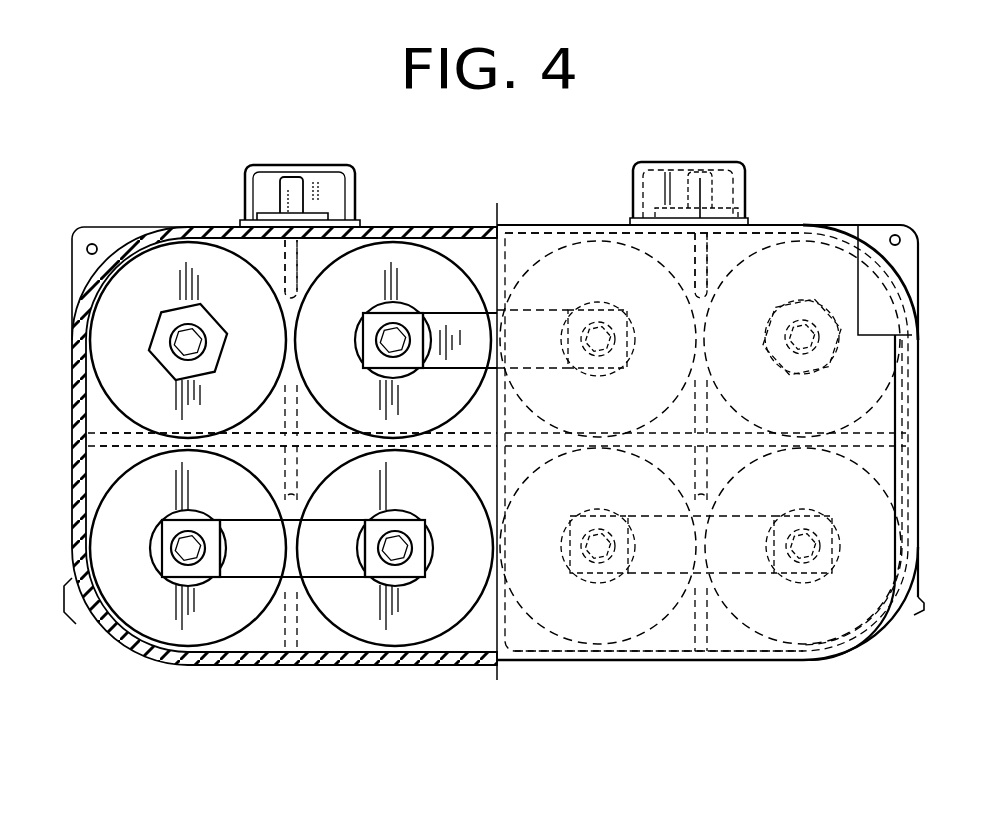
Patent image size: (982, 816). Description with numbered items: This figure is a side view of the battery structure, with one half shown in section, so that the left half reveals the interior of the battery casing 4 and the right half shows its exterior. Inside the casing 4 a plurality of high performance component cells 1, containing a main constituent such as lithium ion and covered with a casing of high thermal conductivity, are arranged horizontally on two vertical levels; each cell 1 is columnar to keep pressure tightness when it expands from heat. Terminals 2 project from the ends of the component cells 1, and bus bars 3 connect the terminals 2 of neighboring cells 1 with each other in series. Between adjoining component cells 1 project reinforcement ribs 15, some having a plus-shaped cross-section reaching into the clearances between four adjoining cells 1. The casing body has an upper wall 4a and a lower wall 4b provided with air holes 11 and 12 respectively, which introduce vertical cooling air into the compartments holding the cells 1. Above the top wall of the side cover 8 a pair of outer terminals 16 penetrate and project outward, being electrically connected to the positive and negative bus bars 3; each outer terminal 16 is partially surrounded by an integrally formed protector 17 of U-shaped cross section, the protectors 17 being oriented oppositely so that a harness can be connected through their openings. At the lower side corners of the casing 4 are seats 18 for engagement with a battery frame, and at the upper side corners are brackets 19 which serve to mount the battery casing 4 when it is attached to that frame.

The component cell 1 is at (150, 268).
The terminal 2 is at (197, 306).
The bus bar 3 is at (448, 362).
The battery casing 4 is at (506, 216).
The upper wall 4a is at (760, 223).
The lower wall 4b is at (725, 661).
The side cover 8 is at (886, 399).
The air hole 11 is at (613, 232).
The air hole 12 is at (640, 662).
The reinforcement rib 15 is at (300, 280).
The outer terminal 16 is at (290, 175).
The protector 17 is at (318, 177).
The seat 18 is at (78, 622).
The bracket 19 is at (78, 238).